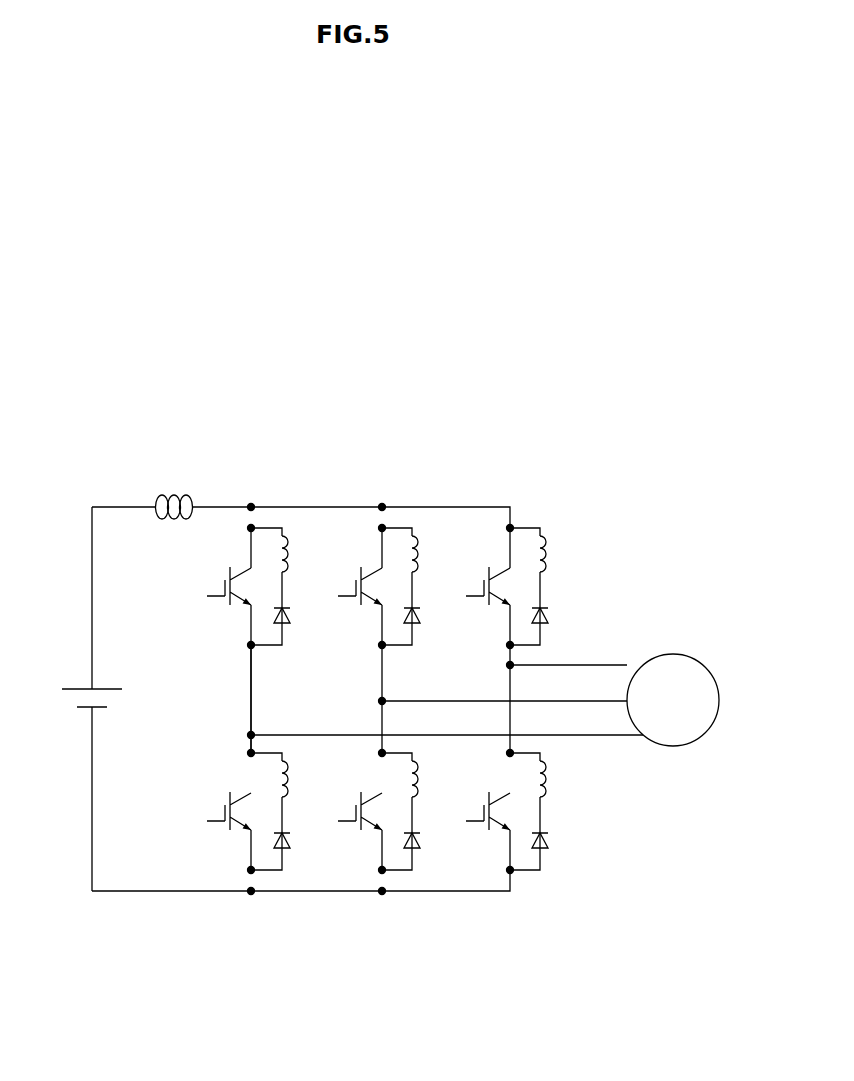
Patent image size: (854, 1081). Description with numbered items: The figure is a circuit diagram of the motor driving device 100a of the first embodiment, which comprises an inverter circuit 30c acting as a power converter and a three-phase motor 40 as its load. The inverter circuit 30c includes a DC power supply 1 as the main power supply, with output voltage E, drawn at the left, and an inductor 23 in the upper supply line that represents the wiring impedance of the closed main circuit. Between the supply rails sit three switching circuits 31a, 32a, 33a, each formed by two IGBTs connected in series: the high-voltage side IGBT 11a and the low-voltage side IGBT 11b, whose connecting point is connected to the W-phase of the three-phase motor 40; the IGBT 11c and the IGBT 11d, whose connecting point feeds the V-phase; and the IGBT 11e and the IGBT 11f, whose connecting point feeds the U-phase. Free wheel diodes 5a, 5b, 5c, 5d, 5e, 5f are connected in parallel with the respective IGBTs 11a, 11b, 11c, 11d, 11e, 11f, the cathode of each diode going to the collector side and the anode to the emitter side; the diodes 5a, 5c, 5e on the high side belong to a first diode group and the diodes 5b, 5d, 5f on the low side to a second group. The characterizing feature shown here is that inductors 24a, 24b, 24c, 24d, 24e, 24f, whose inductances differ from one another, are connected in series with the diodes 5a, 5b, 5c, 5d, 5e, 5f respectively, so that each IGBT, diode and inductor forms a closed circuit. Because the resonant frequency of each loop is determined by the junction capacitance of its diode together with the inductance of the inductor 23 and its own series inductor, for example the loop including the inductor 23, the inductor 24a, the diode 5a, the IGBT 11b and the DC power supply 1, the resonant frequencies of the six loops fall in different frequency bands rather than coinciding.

The DC power supply 1 is at (62, 700).
The inductor 23 is at (174, 494).
The motor driving device 100a is at (384, 448).
The IGBT 11a is at (230, 580).
The IGBT 11b is at (230, 805).
The IGBT 11c is at (361, 580).
The IGBT 11d is at (361, 805).
The IGBT 11e is at (489, 580).
The IGBT 11f is at (489, 805).
The inductor 24a is at (287, 545).
The inductor 24b is at (287, 770).
The inductor 24c is at (417, 545).
The inductor 24d is at (417, 770).
The inductor 24e is at (548, 560).
The inductor 24f is at (548, 784).
The diode 5a is at (290, 612).
The diode 5b is at (311, 848).
The diode 5c is at (420, 612).
The diode 5d is at (441, 848).
The diode 5e is at (548, 610).
The diode 5f is at (569, 848).
The switching circuit 31a is at (271, 712).
The switching circuit 32a is at (402, 712).
The switching circuit 33a is at (546, 740).
The inverter circuit 30c is at (90, 958).
The three-phase motor 40 is at (690, 657).